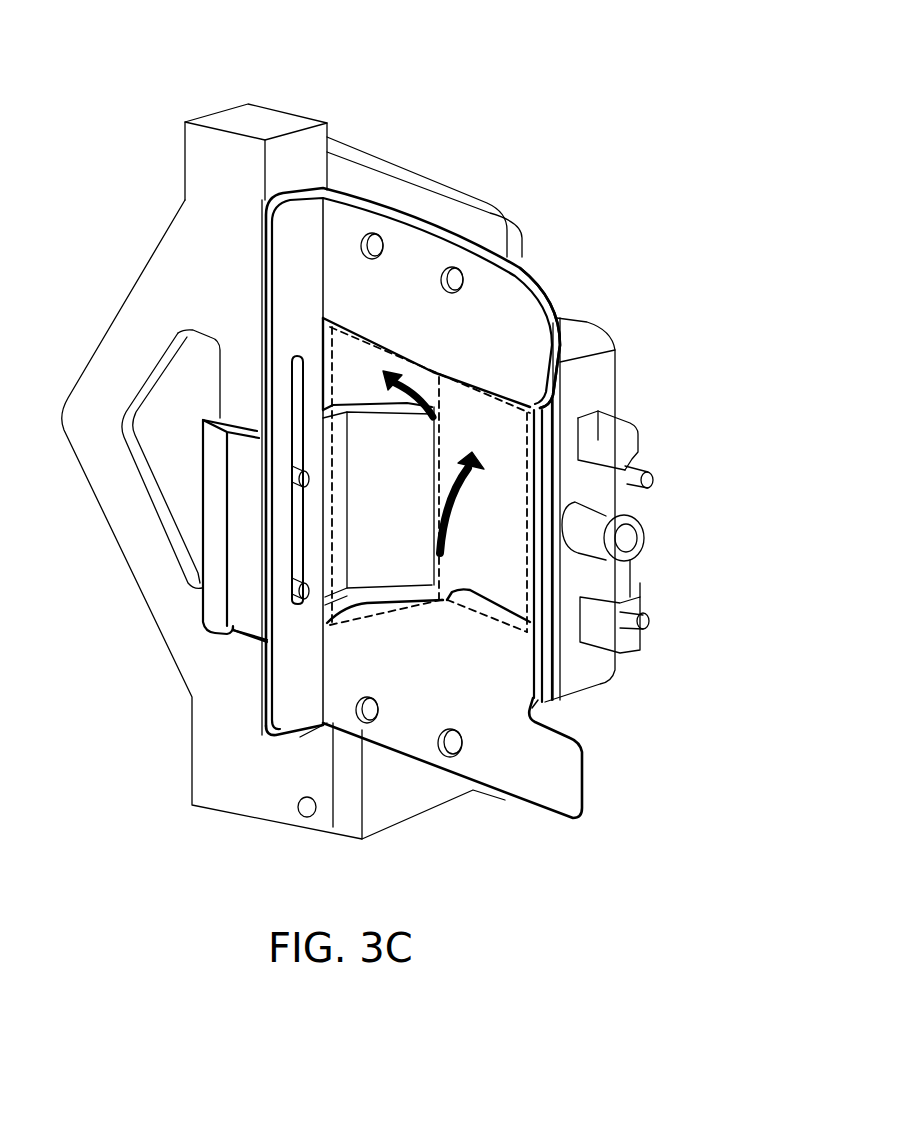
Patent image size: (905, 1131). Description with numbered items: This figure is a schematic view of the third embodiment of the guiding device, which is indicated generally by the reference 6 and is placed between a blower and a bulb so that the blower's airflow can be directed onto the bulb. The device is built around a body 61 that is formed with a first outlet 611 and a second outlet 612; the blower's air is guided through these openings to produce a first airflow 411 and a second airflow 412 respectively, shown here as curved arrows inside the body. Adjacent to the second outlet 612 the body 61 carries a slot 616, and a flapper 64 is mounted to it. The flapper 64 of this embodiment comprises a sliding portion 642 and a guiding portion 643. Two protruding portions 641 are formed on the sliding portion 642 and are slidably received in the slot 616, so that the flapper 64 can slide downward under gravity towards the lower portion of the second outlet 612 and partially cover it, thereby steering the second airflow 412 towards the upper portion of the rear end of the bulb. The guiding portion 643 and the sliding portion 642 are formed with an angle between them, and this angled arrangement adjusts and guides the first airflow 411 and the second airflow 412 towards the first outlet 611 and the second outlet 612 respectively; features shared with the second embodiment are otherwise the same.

The power supply module assembly 6 is at (503, 128).
The body 61 is at (523, 275).
The first outlet 611 is at (543, 403).
The second outlet 612 is at (350, 328).
The slot 616 is at (297, 358).
The flapper 64 is at (208, 637).
The protruding portion 641 is at (295, 597).
The sliding portion 642 is at (293, 457).
The guiding portion 643 is at (402, 538).
The second airflow 412 is at (393, 390).
The first airflow 411 is at (450, 517).